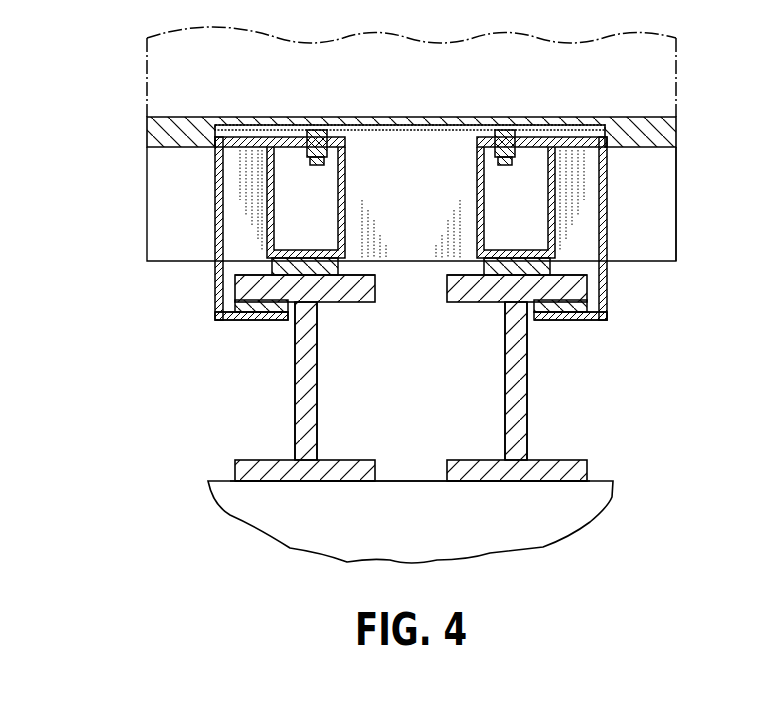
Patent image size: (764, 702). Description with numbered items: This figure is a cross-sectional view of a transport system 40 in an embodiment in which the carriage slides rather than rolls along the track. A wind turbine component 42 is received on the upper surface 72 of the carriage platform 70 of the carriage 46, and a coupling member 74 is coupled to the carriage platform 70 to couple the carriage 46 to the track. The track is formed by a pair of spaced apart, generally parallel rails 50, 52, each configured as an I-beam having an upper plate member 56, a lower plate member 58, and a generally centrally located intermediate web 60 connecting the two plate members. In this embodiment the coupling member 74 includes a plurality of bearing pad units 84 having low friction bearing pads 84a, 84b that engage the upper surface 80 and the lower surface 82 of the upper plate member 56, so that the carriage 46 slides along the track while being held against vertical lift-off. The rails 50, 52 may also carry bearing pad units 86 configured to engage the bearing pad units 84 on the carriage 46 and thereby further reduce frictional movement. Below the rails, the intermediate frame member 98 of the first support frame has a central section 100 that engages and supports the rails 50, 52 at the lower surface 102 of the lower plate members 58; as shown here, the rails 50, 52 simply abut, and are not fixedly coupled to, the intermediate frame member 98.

The transport system 40 is at (703, 225).
The wind turbine component 42 is at (147, 98).
The carriage 46 is at (680, 176).
The rail 50 is at (294, 438).
The rail 52 is at (528, 438).
The upper plate member 56 is at (366, 303).
The lower plate member 58 is at (347, 462).
The intermediate web 60 is at (311, 387).
The carriage platform 70 is at (158, 139).
The upper surface 72 is at (187, 118).
The coupling member 74 is at (158, 177).
The upper surface 80 is at (247, 276).
The lower surface 82 is at (237, 319).
The bearing pad unit 84 is at (215, 201).
The bearing pad 84a is at (303, 262).
The bearing pad 84b is at (283, 314).
The bearing pad unit 86 is at (464, 276).
The intermediate frame member 98 is at (246, 527).
The central section 100 is at (425, 532).
The lower surface 102 is at (302, 483).